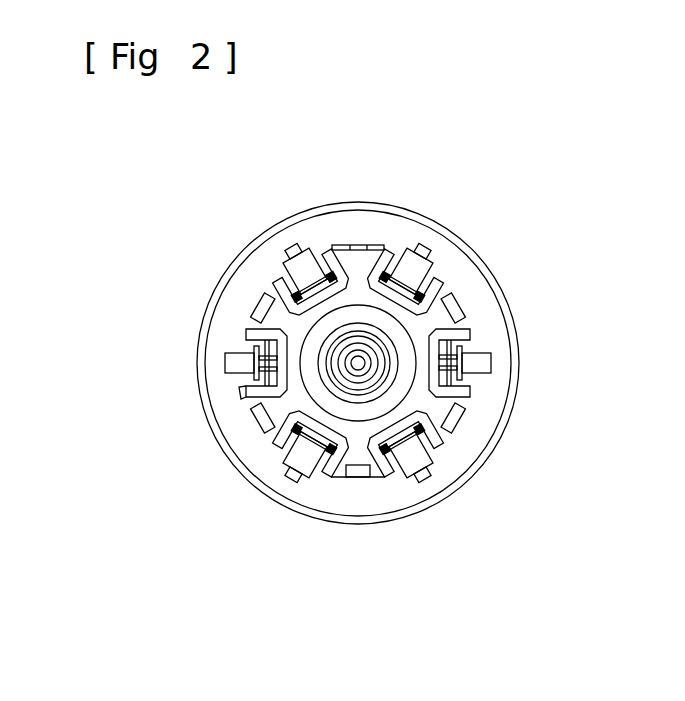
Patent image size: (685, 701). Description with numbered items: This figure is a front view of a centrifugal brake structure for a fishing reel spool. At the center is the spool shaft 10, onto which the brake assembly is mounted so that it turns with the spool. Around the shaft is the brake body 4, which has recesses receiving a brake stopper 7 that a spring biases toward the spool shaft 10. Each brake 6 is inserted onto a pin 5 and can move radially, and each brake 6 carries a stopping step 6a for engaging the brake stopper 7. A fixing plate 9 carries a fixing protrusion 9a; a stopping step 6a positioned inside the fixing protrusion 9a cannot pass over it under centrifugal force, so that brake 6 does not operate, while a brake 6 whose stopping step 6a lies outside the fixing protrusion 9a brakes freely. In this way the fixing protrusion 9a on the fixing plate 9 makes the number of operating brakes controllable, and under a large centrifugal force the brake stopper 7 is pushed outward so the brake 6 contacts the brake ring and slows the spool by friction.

The brake body 4 is at (272, 415).
The pin 5 is at (293, 250).
The brake 6 is at (308, 268).
The stopping step 6a is at (457, 377).
The brake stopper 7 is at (246, 389).
The fixing plate 9 is at (357, 470).
The fixing protrusion 9a is at (250, 334).
The spool shaft 10 is at (358, 363).